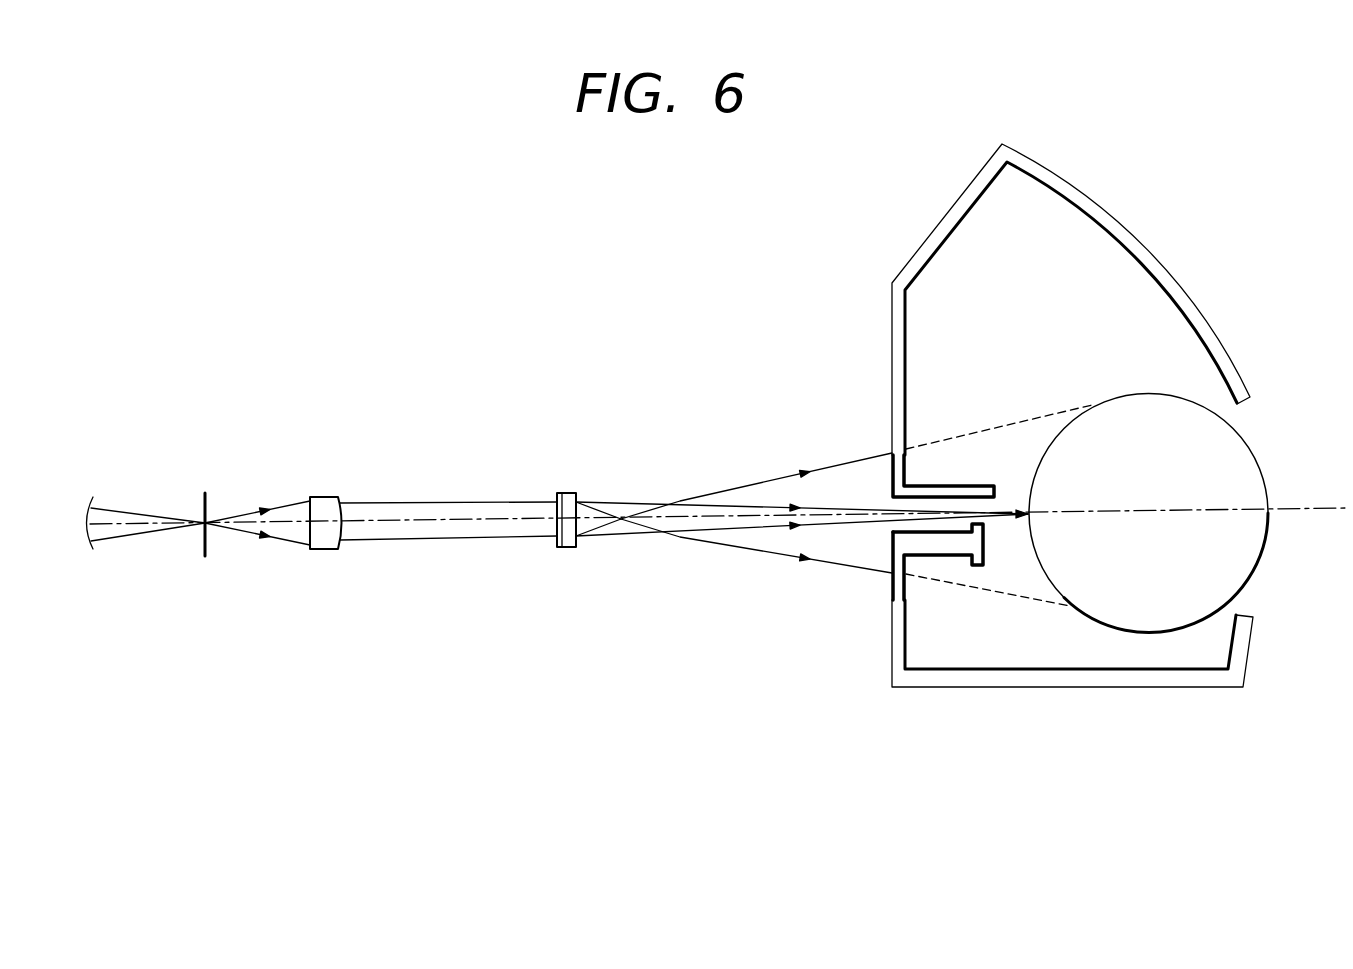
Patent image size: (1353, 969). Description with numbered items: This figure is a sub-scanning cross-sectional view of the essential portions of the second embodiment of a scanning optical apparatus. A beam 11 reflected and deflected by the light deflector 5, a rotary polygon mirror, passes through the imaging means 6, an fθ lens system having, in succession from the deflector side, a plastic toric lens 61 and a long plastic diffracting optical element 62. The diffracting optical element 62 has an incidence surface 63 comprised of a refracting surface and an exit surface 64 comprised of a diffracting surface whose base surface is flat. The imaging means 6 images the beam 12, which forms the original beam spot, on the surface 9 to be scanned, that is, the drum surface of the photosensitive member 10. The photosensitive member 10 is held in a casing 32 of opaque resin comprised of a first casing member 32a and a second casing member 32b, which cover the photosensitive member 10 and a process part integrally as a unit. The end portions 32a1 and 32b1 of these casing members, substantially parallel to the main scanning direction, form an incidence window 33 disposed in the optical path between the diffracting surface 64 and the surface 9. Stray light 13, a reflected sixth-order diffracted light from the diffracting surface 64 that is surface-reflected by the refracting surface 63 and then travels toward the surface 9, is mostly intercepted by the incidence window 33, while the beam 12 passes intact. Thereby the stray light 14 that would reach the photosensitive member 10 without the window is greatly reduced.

The light deflector 5 is at (207, 501).
The imaging means 6 is at (452, 488).
The surface to be scanned 9 is at (1130, 393).
The photosensitive member 10 is at (1237, 572).
The incident light beam 11 is at (116, 512).
The beam 12 is at (616, 502).
The stray light 13 is at (737, 487).
The stray light 14 is at (973, 428).
The casing 32 is at (1027, 474).
The first casing member 32a is at (1262, 758).
The end portion 32a1 is at (920, 555).
The second casing member 32b is at (918, 262).
The end portion 32b1 is at (943, 489).
The incidence window 33 is at (893, 507).
The toric lens 61 is at (319, 495).
The long diffracting optical element 62 is at (571, 492).
The incidence surface 63 is at (548, 533).
The exit surface 64 is at (580, 548).